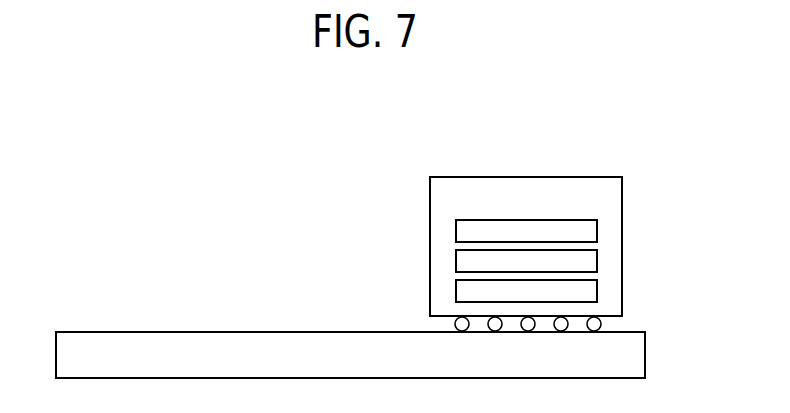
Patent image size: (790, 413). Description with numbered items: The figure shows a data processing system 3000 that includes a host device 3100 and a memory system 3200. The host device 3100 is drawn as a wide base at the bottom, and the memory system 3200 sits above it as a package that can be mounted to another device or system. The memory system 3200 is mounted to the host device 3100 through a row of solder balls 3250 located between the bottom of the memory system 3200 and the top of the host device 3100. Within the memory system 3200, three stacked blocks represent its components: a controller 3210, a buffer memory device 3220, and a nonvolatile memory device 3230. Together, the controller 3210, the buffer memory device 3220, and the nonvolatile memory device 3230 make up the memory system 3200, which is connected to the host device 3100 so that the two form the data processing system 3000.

The data processing system 3000 is at (190, 150).
The host device 3100 is at (350, 355).
The memory system 3200 is at (526, 246).
The controller 3210 is at (526, 231).
The buffer memory device 3220 is at (526, 261).
The nonvolatile memory device 3230 is at (526, 291).
The solder balls 3250 is at (610, 324).